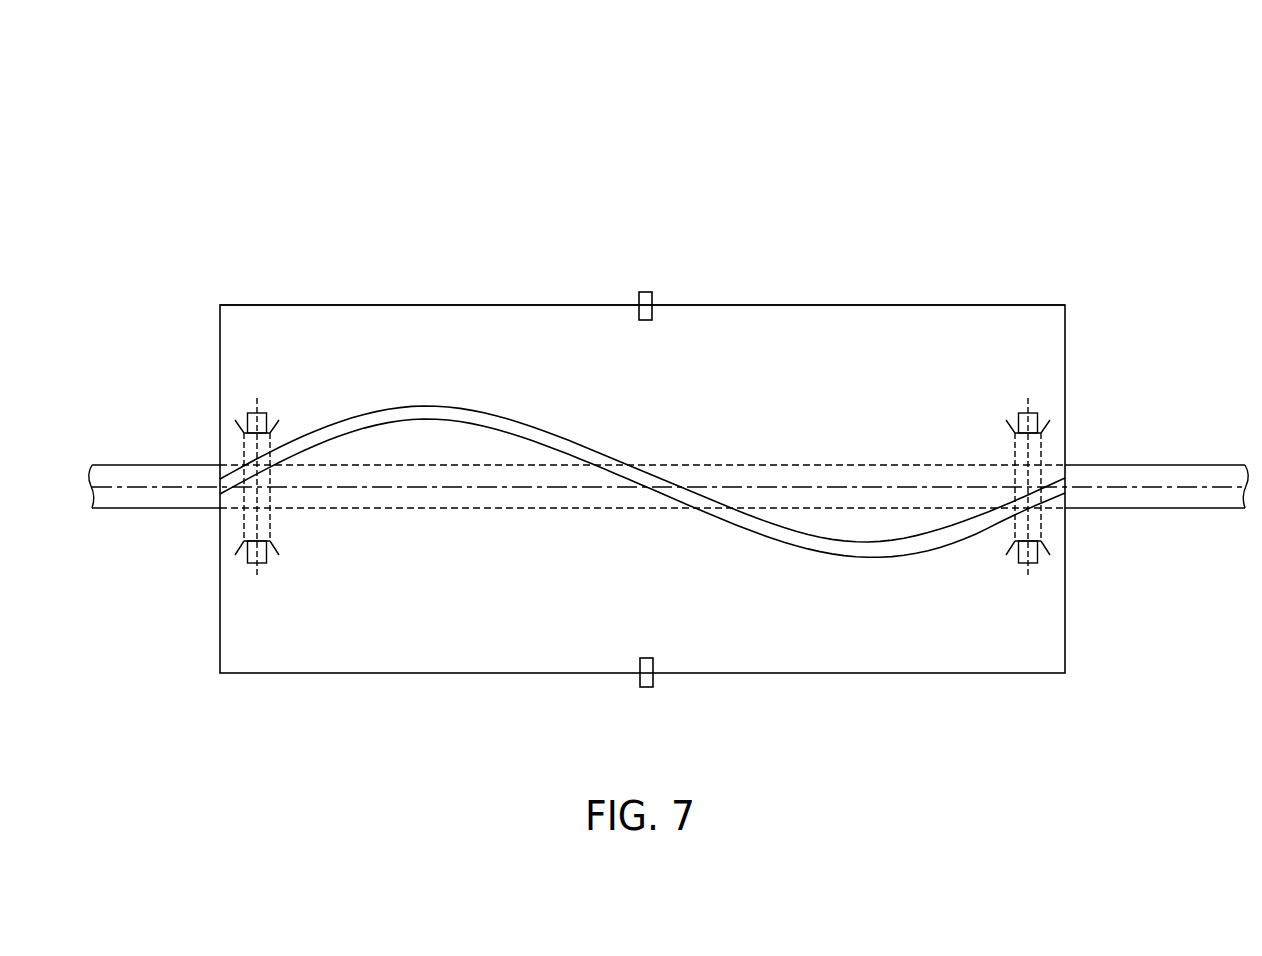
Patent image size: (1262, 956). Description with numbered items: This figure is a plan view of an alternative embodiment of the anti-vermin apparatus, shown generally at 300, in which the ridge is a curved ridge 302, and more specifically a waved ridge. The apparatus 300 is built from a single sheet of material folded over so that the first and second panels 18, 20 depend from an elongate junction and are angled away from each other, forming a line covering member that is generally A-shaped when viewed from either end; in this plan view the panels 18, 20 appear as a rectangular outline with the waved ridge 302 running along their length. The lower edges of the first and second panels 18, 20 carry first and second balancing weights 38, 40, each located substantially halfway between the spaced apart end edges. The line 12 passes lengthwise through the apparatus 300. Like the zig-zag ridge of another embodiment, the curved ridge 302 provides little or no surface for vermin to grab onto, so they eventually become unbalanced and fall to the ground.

The anti-vermin apparatus 300 is at (1012, 128).
The rod 12 is at (137, 463).
The first panel 18 is at (441, 640).
The second panel 20 is at (848, 330).
The second balancing weight 40 is at (646, 290).
The first balancing weight 38 is at (645, 688).
The curved ridge 302 is at (591, 440).